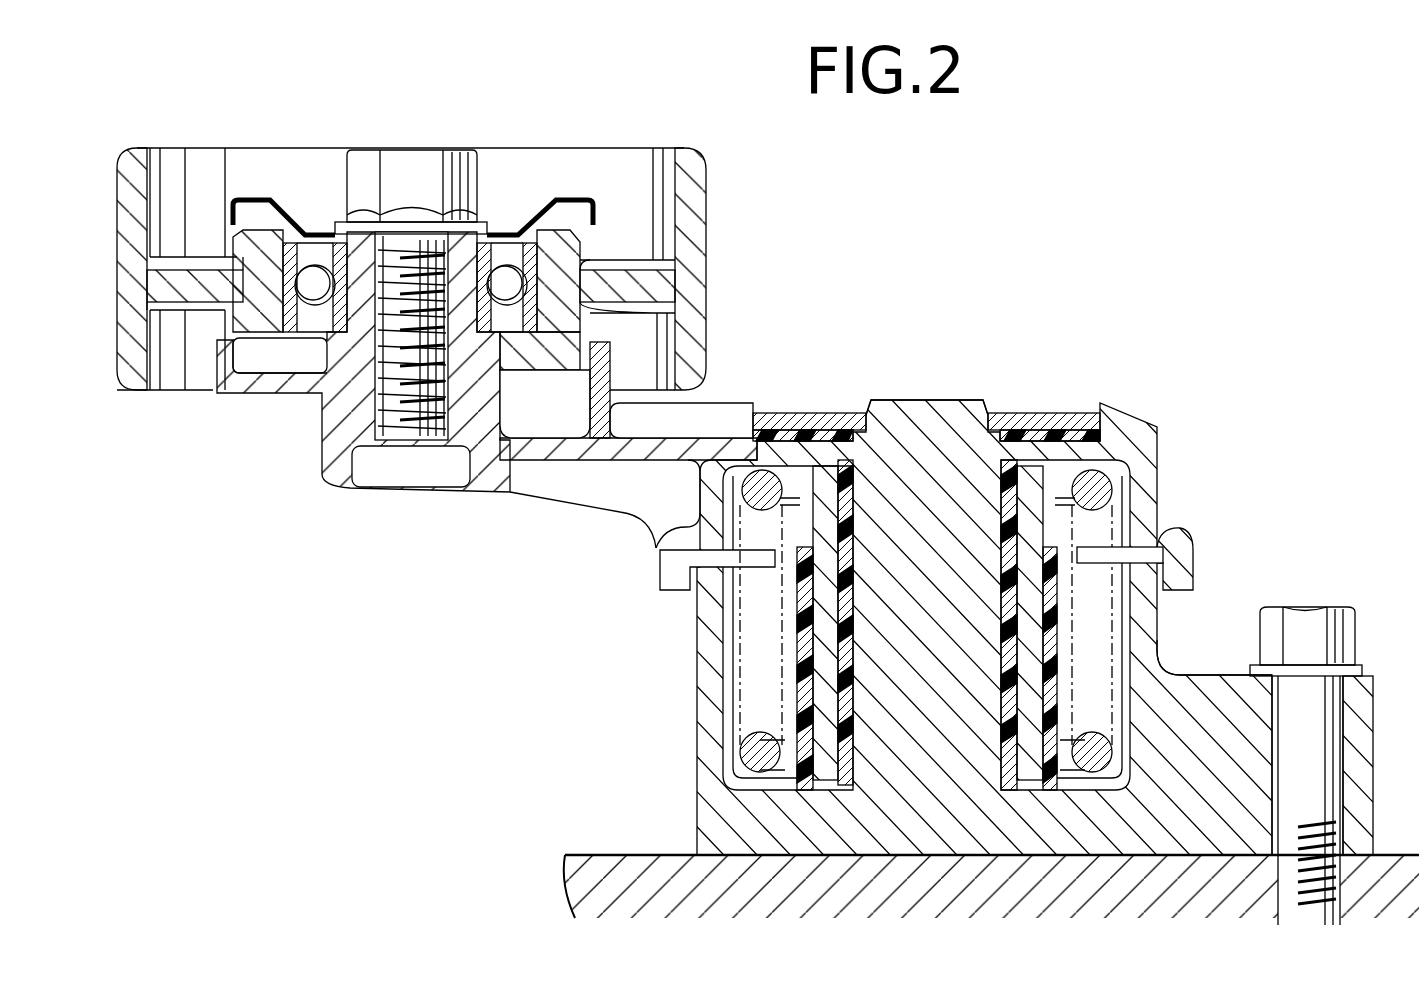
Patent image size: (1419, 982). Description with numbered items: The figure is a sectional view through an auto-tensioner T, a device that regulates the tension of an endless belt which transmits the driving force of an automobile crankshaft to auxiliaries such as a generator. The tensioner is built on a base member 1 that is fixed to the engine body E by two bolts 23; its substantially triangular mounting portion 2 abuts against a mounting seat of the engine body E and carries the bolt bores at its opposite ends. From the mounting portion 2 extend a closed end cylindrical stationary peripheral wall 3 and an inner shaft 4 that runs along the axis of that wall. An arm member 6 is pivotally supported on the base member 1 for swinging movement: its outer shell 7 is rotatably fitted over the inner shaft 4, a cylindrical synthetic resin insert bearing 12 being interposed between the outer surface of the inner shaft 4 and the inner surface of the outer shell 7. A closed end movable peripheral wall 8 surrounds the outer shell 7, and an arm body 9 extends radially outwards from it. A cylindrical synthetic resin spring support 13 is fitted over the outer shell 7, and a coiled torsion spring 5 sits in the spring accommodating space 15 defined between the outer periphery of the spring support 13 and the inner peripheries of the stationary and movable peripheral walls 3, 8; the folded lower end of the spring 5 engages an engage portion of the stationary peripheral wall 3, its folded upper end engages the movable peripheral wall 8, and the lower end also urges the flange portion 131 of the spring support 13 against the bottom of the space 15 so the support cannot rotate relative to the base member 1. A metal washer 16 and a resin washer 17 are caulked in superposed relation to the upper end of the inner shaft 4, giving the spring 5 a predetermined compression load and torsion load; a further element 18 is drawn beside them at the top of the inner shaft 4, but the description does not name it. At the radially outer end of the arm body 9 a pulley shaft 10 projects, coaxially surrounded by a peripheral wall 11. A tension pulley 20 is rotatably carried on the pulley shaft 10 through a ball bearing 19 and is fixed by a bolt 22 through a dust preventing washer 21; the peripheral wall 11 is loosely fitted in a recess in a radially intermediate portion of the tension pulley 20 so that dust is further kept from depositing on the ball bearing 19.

The base member 1 is at (1187, 658).
The mounting portion 2 is at (1376, 768).
The stationary peripheral wall 3 is at (697, 678).
The inner shaft 4 is at (930, 402).
The coiled torsion spring 5 is at (1088, 726).
The arm member 6 is at (560, 514).
The outer shell 7 is at (1058, 603).
The movable peripheral wall 8 is at (1190, 546).
The arm body 9 is at (633, 498).
The pulley shaft 10 is at (330, 354).
The peripheral wall 11 is at (598, 366).
The insert bearing 12 is at (848, 594).
The spring support 13 is at (796, 665).
The flange portion 131 is at (745, 788).
The spring accommodating space 15 is at (778, 639).
The metal washer 16 is at (773, 412).
The resin washer 17 is at (815, 436).
The seal 18 is at (1000, 412).
The ball bearing 19 is at (513, 284).
The tension pulley 20 is at (690, 200).
The dust preventing washer 21 is at (255, 205).
The bolt 22 is at (415, 160).
The bolt 23 is at (1300, 624).
The engine body E is at (602, 875).
The auto-tensioner T is at (992, 262).